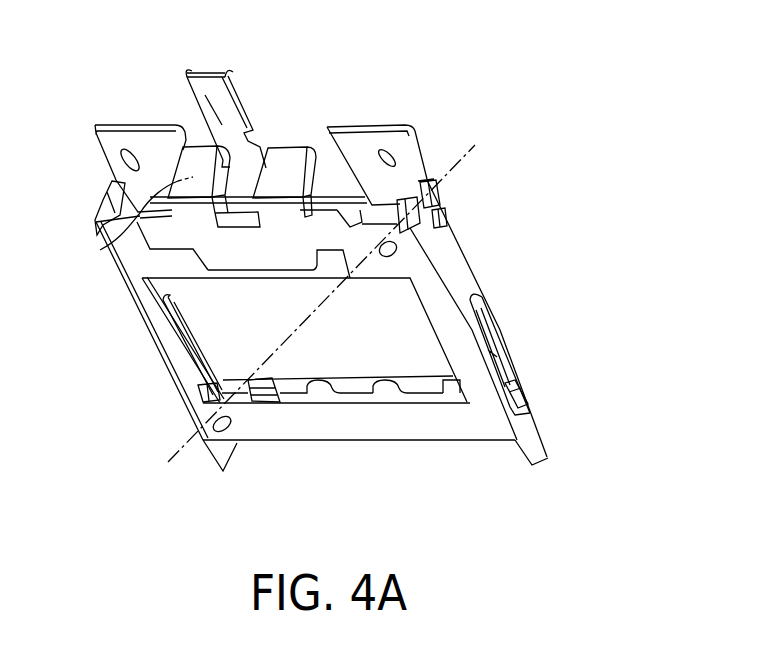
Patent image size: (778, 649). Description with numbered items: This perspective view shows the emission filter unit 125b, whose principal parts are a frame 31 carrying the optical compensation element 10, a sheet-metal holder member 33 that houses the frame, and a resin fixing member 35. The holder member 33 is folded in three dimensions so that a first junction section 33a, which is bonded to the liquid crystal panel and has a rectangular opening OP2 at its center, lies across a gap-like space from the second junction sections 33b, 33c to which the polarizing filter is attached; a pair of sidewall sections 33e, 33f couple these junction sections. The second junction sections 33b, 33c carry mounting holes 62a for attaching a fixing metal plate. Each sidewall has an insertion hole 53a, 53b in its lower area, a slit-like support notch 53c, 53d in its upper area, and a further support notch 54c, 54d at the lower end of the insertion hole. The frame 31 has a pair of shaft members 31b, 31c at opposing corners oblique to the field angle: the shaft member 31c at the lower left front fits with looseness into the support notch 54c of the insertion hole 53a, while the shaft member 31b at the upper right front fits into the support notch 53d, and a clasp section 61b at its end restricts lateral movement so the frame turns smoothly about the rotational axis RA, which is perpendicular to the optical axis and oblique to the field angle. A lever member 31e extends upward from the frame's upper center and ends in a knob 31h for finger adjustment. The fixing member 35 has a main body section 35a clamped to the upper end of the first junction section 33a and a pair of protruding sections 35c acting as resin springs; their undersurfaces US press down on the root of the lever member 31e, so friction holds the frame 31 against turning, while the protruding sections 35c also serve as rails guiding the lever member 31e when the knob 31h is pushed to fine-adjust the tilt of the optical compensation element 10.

The holder member 33 is at (317, 274).
The first junction section 33a is at (487, 437).
The second junction section 33b is at (135, 125).
The second junction section 33c is at (377, 127).
The sidewall section 33e is at (153, 347).
The sidewall section 33f is at (463, 267).
The fixing member 35 is at (130, 268).
The main body section 35a is at (258, 260).
The protruding section 35c is at (293, 153).
The frame 31 is at (353, 400).
The shaft member 31b is at (393, 220).
The shaft member 31c is at (247, 395).
The lever member 31e is at (202, 73).
The knob 31h is at (218, 108).
The insertion hole 53a is at (170, 323).
The insertion hole 53b is at (500, 360).
The support notch 53c is at (110, 187).
The support notch 53d is at (447, 220).
The support notch 54c is at (200, 387).
The support notch 54d is at (530, 400).
The clasp section 61b is at (440, 197).
The mounting hole 62a is at (393, 155).
The optical compensation element 10 is at (393, 373).
The emission filter unit 125b is at (563, 298).
The rectangular opening OP2 is at (417, 387).
The rotational axis RA is at (190, 460).
The undersurface US is at (280, 176).